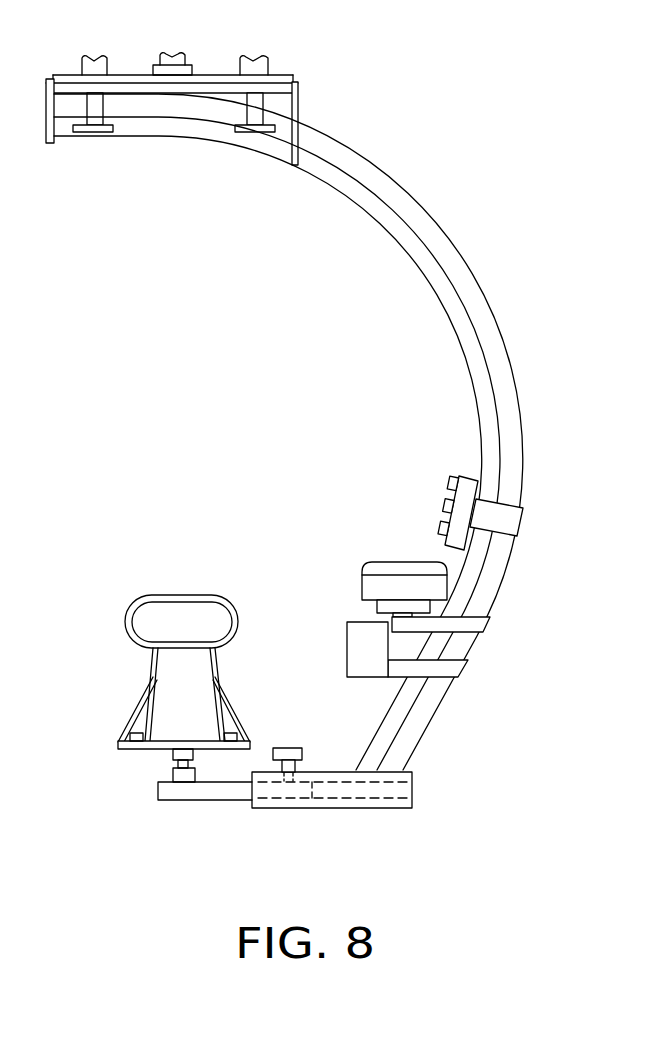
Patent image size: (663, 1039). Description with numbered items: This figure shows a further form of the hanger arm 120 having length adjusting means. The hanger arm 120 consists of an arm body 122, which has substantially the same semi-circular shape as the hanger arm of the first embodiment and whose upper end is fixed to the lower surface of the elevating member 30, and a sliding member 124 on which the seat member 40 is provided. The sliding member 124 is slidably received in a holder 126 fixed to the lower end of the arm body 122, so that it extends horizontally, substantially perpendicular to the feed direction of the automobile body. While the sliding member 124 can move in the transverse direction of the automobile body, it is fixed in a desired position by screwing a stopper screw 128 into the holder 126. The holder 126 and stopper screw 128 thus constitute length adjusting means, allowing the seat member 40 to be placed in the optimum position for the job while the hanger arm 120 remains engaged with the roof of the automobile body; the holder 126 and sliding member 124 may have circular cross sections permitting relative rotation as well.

The elevating member 30 is at (140, 87).
The seat member 40 is at (88, 600).
The hanger arm 120 is at (445, 112).
The arm body 122 is at (468, 290).
The sliding member 124 is at (212, 790).
The holder 126 is at (347, 790).
The stopper screw 128 is at (287, 748).